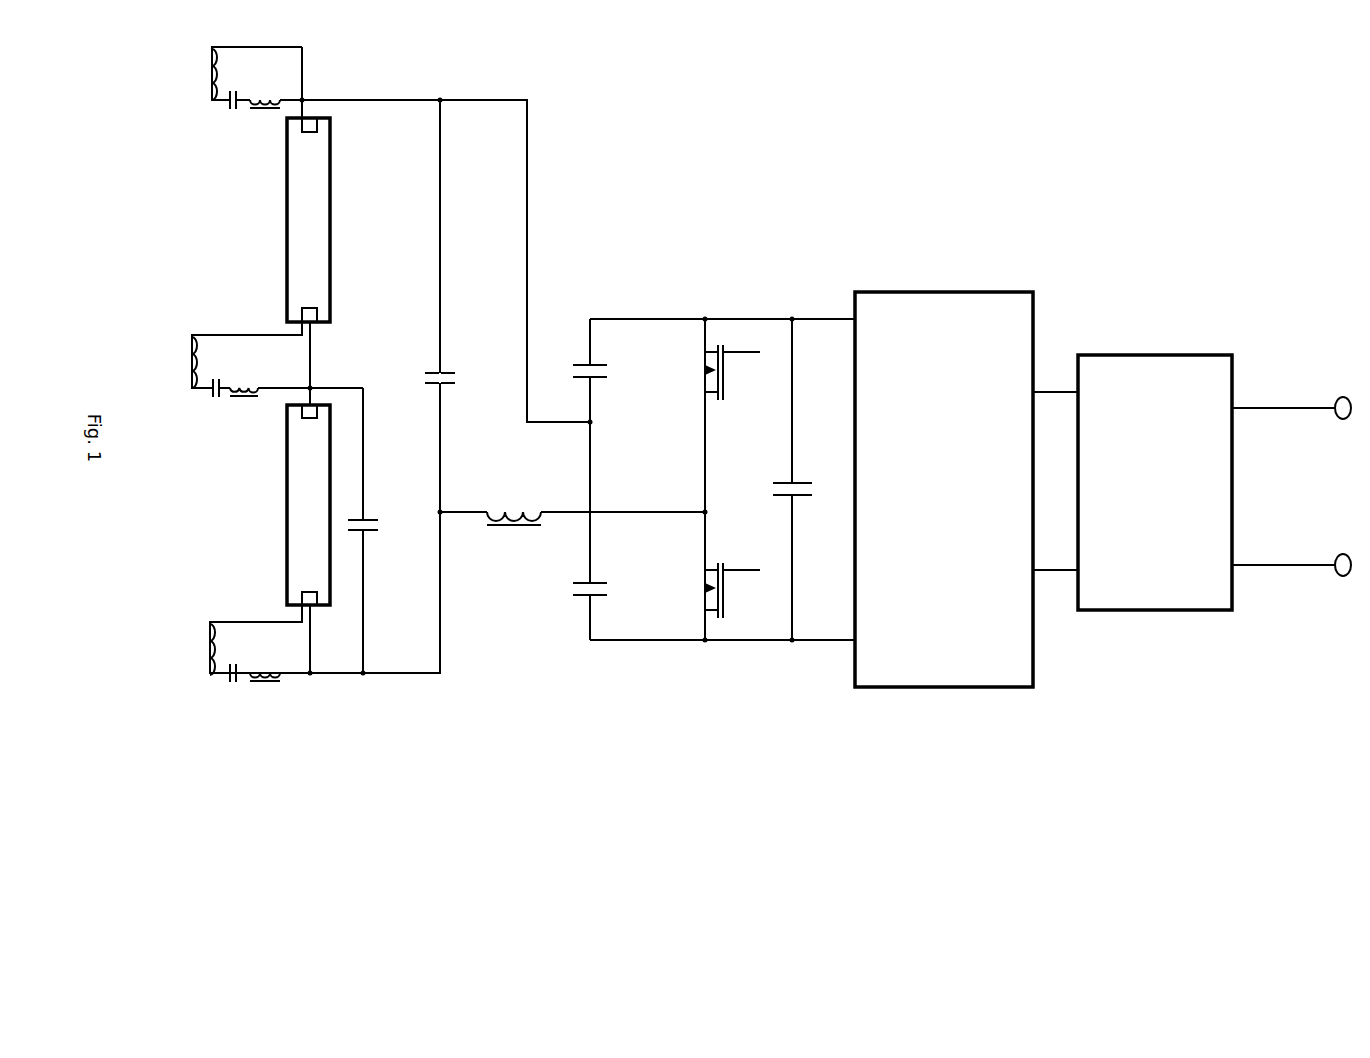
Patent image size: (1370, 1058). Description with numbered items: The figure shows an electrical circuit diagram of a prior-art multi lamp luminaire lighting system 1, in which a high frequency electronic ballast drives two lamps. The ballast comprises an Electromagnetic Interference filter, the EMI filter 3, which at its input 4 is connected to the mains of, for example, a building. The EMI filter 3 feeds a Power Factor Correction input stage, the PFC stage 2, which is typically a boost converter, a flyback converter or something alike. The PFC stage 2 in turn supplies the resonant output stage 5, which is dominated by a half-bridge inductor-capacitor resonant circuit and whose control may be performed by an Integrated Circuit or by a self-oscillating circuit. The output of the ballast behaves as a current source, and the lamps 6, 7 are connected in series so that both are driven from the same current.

The multi lamp luminaire lighting system 1 is at (509, 863).
The PFC stage 2 is at (926, 674).
The EMI filter 3 is at (1202, 608).
The input 4 is at (1319, 614).
The resonant output stage 5 is at (635, 703).
The lamp 6 is at (258, 540).
The lamp 7 is at (258, 254).